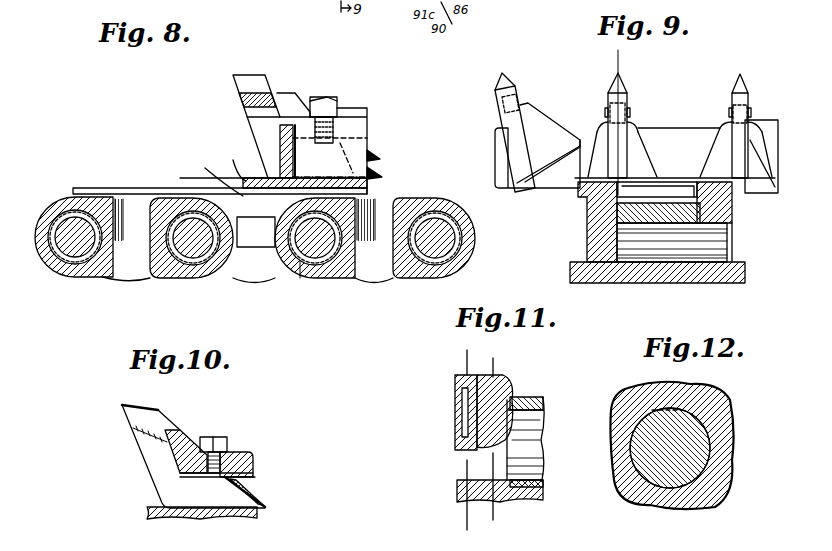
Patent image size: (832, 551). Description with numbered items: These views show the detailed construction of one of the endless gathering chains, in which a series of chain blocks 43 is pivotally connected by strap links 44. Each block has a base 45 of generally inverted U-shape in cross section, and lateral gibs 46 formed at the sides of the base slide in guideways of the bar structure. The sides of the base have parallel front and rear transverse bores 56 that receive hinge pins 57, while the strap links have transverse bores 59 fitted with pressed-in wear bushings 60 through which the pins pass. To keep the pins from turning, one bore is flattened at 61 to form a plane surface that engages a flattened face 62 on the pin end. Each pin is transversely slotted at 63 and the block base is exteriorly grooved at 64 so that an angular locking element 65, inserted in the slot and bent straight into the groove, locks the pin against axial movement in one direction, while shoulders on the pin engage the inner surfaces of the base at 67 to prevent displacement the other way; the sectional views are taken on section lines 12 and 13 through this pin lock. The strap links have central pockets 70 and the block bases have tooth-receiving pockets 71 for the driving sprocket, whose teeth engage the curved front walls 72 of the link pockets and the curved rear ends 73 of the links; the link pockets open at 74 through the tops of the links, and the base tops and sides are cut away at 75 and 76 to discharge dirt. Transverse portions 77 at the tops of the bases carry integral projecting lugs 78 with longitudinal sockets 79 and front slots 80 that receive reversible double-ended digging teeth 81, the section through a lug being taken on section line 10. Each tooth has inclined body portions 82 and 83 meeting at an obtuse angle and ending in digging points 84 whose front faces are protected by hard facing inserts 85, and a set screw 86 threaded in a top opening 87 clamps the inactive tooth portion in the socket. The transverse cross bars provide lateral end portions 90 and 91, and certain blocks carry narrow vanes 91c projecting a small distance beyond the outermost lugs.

In FIG. 9, the section line 10 is at (606, 62).
In FIG. 11, the section line 12 is at (494, 358).
In FIG. 11, the section line 13 is at (458, 357).
In FIG. 8, the chain block 43 is at (368, 185).
In FIG. 9, the chain block 43 is at (734, 211).
In FIG. 8, the strap link 44 is at (80, 196).
In FIG. 9, the strap link 44 is at (672, 283).
In FIG. 11, the strap link 44 is at (532, 499).
In FIG. 8, the block base 45 is at (214, 176).
In FIG. 9, the block base 45 is at (587, 205).
In FIG. 11, the block base 45 is at (457, 493).
In FIG. 12, the block base 45 is at (722, 440).
In FIG. 9, the lateral gib 46 is at (570, 272).
In FIG. 9, the transverse bore 56 is at (602, 283).
In FIG. 12, the transverse bore 56 is at (700, 468).
In FIG. 8, the hinge pin 57 is at (70, 225).
In FIG. 9, the hinge pin 57 is at (612, 242).
In FIG. 11, the hinge pin 57 is at (525, 447).
In FIG. 12, the hinge pin 57 is at (676, 462).
In FIG. 8, the transverse bore 59 is at (72, 252).
In FIG. 9, the transverse bore 59 is at (642, 283).
In FIG. 11, the transverse bore 59 is at (535, 413).
In FIG. 8, the wear bushing 60 is at (55, 252).
In FIG. 9, the wear bushing 60 is at (704, 283).
In FIG. 11, the wear bushing 60 is at (543, 484).
In FIG. 12, the flattened surface 61 is at (660, 420).
In FIG. 11, the flattened face 62 is at (510, 388).
In FIG. 11, the transverse slot 63 is at (458, 437).
In FIG. 11, the exterior groove 64 is at (460, 390).
In FIG. 11, the locking element 65 is at (472, 413).
In FIG. 11, the shoulder engagement 67 is at (530, 404).
In FIG. 8, the pocket 70 is at (134, 258).
In FIG. 8, the tooth-receiving pocket 71 is at (265, 256).
In FIG. 8, the curved front wall 72 is at (100, 254).
In FIG. 8, the curved rear end 73 is at (218, 254).
In FIG. 8, the pocket opening 74 is at (128, 204).
In FIG. 8, the cut-away portion 75 is at (230, 163).
In FIG. 8, the cut-away portion 76 is at (302, 268).
In FIG. 9, the transverse portion 77 is at (673, 128).
In FIG. 8, the projecting lug 78 is at (367, 113).
In FIG. 9, the projecting lug 78 is at (545, 118).
In FIG. 10, the projecting lug 78 is at (255, 455).
In FIG. 8, the longitudinal socket 79 is at (287, 151).
In FIG. 9, the longitudinal socket 79 is at (607, 138).
In FIG. 10, the longitudinal socket 79 is at (196, 442).
In FIG. 10, the front slot 80 is at (160, 457).
In FIG. 8, the digging tooth 81 is at (240, 107).
In FIG. 9, the digging tooth 81 is at (512, 88).
In FIG. 10, the digging tooth 81 is at (165, 483).
In FIG. 8, the inclined body portion 82 is at (252, 110).
In FIG. 10, the inclined body portion 82 is at (160, 465).
In FIG. 10, the inclined body portion 83 is at (236, 508).
In FIG. 8, the digging point 84 is at (233, 75).
In FIG. 9, the digging point 84 is at (502, 78).
In FIG. 10, the digging point 84 is at (122, 405).
In FIG. 8, the hard facing insert 85 is at (240, 86).
In FIG. 9, the hard facing insert 85 is at (500, 89).
In FIG. 10, the hard facing insert 85 is at (126, 414).
In FIG. 8, the set screw 86 is at (327, 99).
In FIG. 9, the set screw 86 is at (503, 112).
In FIG. 10, the set screw 86 is at (218, 437).
In FIG. 10, the top opening 87 is at (231, 452).
In FIG. 9, the lateral end portion 90 is at (780, 143).
In FIG. 9, the lateral end portion 91 is at (495, 150).
In FIG. 9, the narrow vane 91c is at (506, 182).